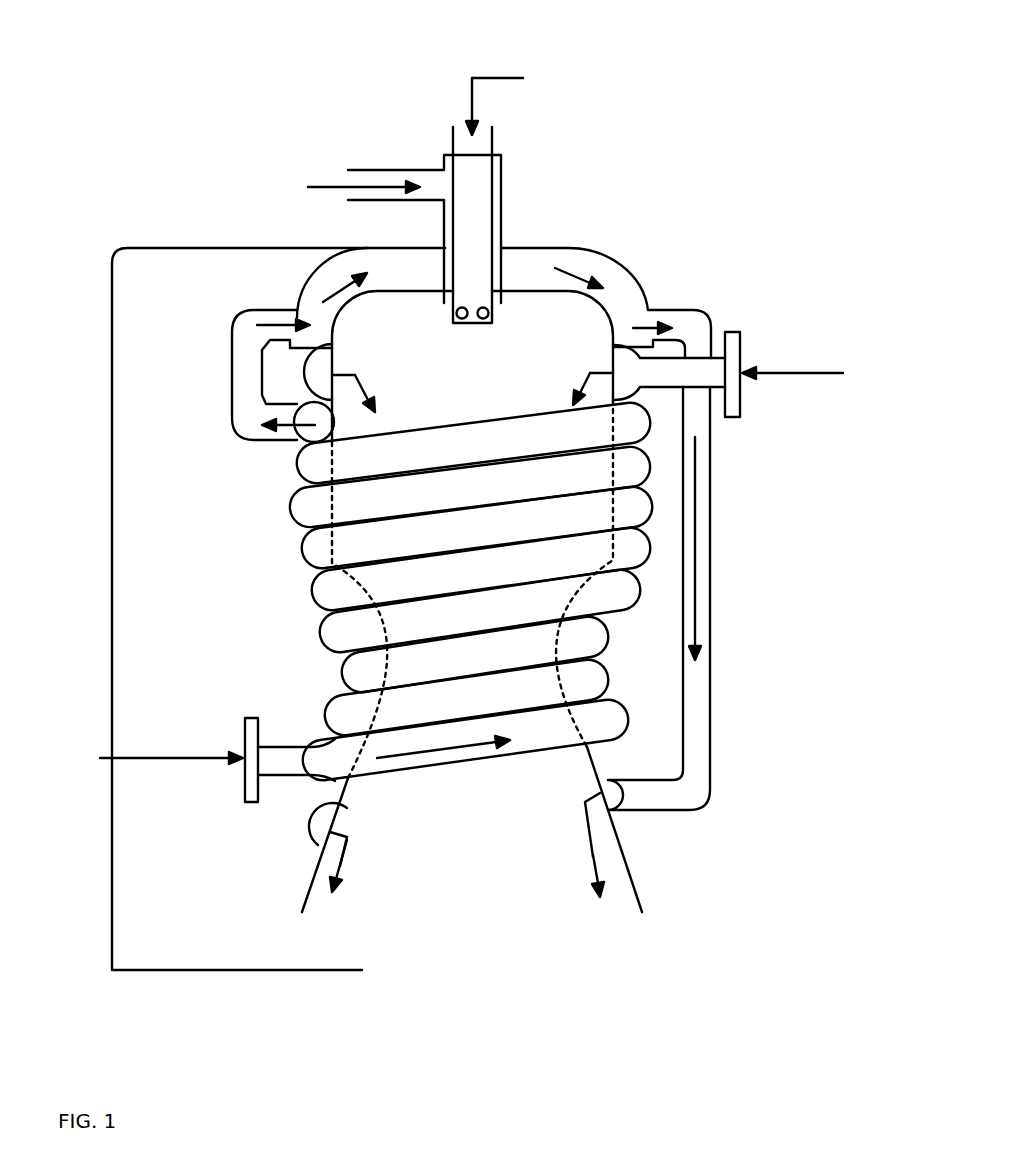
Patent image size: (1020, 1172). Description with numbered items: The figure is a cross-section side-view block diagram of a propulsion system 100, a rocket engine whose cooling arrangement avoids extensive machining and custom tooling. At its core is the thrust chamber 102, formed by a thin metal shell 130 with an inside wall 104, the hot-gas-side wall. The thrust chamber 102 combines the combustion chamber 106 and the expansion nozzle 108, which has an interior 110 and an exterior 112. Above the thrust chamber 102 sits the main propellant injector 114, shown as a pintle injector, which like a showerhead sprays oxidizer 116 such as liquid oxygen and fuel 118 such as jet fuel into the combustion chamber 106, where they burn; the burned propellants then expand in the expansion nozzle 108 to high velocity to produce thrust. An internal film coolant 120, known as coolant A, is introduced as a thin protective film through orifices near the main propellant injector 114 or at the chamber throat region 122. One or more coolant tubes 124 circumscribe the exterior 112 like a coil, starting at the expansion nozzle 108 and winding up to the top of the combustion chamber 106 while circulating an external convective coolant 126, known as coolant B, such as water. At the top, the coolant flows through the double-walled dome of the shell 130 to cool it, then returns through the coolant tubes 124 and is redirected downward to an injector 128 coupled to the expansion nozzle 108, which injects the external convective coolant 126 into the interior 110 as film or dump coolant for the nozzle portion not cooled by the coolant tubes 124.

The propulsion system 100 is at (729, 1066).
The thrust chamber 102 is at (98, 598).
The inside wall 104 is at (380, 291).
The combustion chamber 106 is at (463, 344).
The expansion nozzle 108 is at (472, 829).
The interior 110 is at (342, 807).
The exterior 112 is at (310, 868).
The main propellant injector 114 is at (442, 157).
The oxidizer 116 is at (531, 92).
The fuel 118 is at (341, 185).
The internal film coolant 120 is at (567, 322).
The chamber throat region 122 is at (472, 589).
The coolant tube 124 is at (640, 327).
The external convective coolant 126 is at (243, 272).
The injector 128 is at (252, 718).
The shell 130 is at (357, 368).